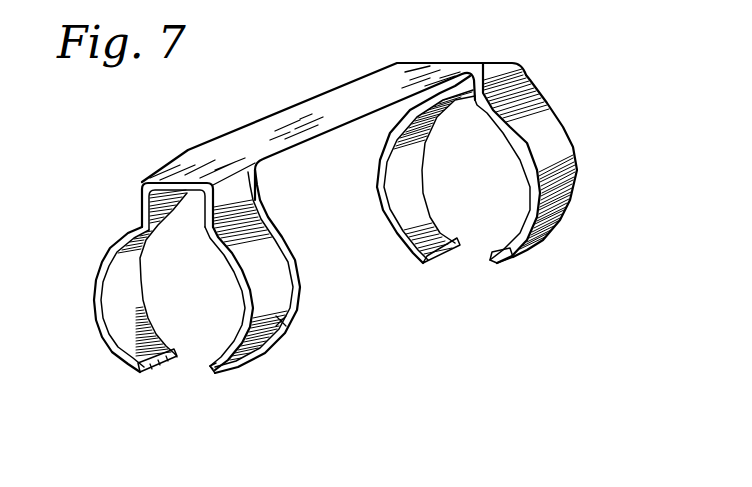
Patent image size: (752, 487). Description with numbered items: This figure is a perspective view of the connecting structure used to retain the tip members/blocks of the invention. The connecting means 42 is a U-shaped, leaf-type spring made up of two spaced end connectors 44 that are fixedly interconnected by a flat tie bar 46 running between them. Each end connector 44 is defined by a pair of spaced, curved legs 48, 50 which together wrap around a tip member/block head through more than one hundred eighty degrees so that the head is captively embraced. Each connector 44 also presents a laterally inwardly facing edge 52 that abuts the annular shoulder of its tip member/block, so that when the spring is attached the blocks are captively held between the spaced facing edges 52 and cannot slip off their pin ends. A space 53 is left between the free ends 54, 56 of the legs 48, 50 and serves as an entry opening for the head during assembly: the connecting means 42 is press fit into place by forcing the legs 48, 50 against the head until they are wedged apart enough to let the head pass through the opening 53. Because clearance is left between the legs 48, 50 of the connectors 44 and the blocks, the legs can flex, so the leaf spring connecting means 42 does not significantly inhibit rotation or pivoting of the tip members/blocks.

The connecting means 42 is at (444, 46).
The end connector 44 is at (575, 140).
The tie bar 46 is at (312, 128).
The curved leg 48 is at (122, 293).
The curved leg 50 is at (289, 320).
The laterally inwardly facing edge 52 is at (523, 183).
The space 53 is at (191, 360).
The free end 54 is at (167, 373).
The free end 56 is at (217, 368).